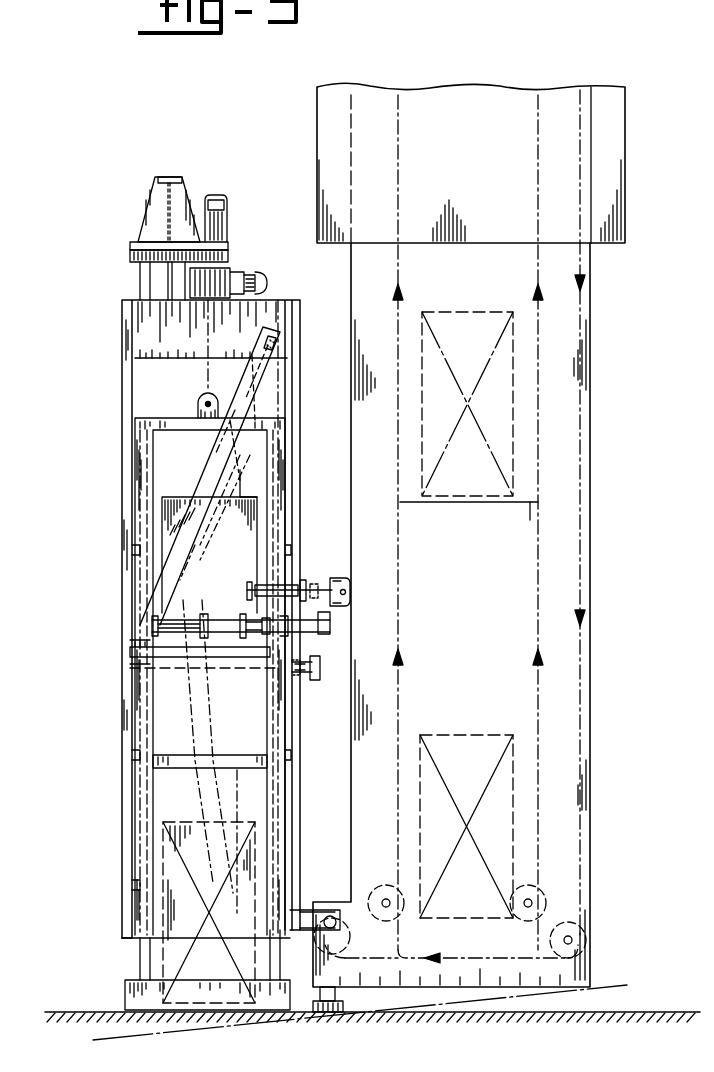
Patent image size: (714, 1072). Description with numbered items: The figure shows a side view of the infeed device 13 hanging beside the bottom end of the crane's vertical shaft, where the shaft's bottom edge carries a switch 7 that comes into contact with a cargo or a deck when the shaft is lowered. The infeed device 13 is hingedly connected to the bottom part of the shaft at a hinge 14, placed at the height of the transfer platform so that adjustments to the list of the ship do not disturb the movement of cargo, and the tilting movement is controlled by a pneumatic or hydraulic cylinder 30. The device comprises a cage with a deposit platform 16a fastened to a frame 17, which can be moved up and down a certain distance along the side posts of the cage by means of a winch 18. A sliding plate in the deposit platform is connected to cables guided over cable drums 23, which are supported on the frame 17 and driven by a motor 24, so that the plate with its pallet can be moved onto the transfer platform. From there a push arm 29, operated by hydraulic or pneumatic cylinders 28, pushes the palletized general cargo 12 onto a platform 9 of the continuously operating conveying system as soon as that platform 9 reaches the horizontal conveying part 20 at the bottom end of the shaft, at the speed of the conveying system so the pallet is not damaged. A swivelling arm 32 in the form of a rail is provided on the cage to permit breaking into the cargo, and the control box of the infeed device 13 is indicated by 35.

The switch 7 is at (322, 1014).
The platform 9 is at (530, 520).
The palletized general cargo 12 is at (500, 424).
The infeed device 13 is at (116, 565).
The hinge 14 is at (338, 927).
The deposit platform 16a is at (128, 1003).
The frame 17 is at (135, 445).
The winch 18 is at (222, 283).
The horizontal conveying part 20 is at (355, 888).
The cable drum 23 is at (255, 668).
The motor 24 is at (305, 674).
The cylinder 28 is at (300, 640).
The push arm 29 is at (185, 530).
The cylinder 30 is at (318, 590).
The swivelling arm 32 is at (168, 190).
The control box 35 is at (248, 528).